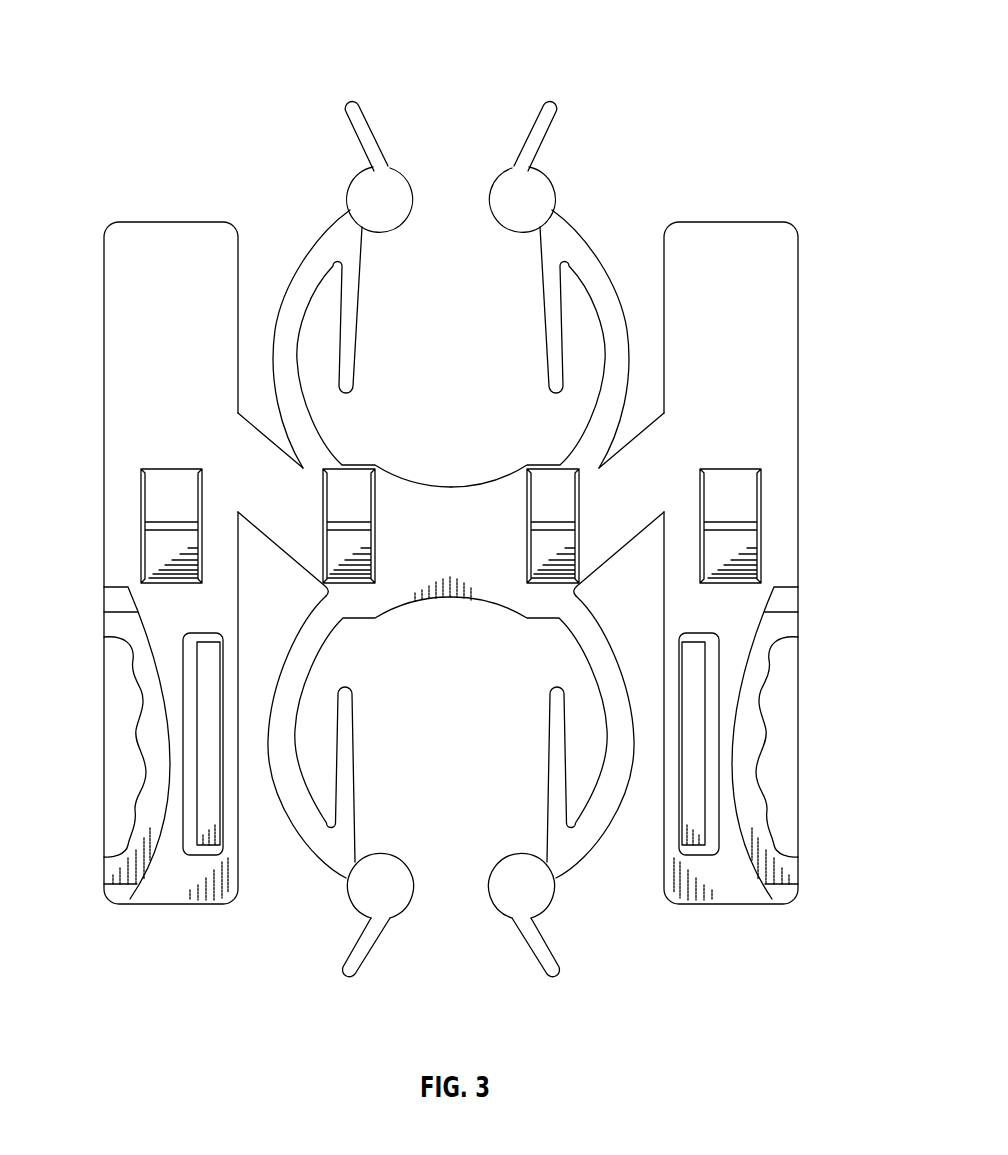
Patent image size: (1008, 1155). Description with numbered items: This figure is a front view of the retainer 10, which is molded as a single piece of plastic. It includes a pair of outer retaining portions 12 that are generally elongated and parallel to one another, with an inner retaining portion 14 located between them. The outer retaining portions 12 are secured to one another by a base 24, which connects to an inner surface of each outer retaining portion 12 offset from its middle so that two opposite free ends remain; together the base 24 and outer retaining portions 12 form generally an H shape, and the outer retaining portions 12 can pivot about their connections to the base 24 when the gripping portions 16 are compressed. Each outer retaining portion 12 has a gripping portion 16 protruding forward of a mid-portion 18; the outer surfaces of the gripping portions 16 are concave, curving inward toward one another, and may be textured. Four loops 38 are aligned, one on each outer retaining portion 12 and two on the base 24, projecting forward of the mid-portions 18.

The retainer 10 is at (460, 498).
The outer retaining portion 12 is at (482, 534).
The inner retaining portion 14 is at (285, 100).
The gripping portion 16 is at (137, 752).
The mid-portion 18 is at (799, 305).
The base 24 is at (450, 603).
The loop 38 is at (172, 468).